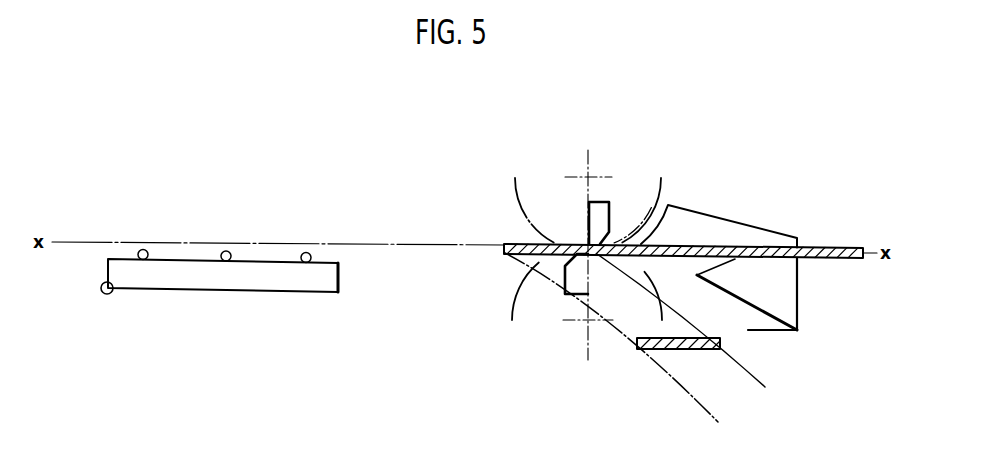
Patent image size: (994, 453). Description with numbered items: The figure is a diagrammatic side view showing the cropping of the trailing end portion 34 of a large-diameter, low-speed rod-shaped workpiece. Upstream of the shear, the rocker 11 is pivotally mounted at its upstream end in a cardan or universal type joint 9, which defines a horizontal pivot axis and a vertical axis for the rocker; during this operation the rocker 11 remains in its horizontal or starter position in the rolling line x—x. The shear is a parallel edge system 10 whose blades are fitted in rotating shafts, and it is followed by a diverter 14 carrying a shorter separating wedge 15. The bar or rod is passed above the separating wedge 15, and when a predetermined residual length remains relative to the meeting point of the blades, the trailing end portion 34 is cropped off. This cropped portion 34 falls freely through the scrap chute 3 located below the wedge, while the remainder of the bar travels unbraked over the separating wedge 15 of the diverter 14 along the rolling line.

The scrap chute 3 is at (743, 404).
The cardan or universal type joint 9 is at (103, 294).
The parallel edge system 10 is at (540, 172).
The rocker 11 is at (236, 282).
The diverter 14 is at (733, 222).
The separating wedge 15 is at (783, 293).
The trailing end portion 34 is at (504, 245).